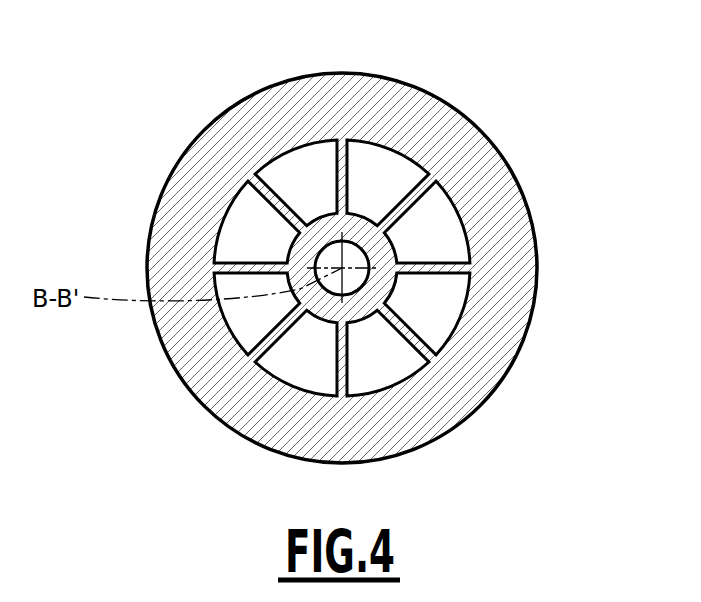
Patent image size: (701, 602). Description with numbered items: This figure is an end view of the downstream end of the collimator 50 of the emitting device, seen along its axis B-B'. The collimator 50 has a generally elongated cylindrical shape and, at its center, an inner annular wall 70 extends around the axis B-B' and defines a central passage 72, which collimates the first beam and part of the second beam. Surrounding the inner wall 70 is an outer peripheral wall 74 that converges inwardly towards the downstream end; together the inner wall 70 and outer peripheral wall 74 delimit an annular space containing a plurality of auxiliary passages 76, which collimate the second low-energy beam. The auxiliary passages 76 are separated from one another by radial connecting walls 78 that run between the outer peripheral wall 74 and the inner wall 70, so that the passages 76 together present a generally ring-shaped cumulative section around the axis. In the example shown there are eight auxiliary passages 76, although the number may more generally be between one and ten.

The collimator 50 is at (208, 120).
The inner annular wall 70 is at (386, 285).
The central passage 72 is at (335, 296).
The outer peripheral wall 74 is at (442, 388).
The auxiliary passages 76 is at (322, 171).
The radial connecting walls 78 is at (282, 183).